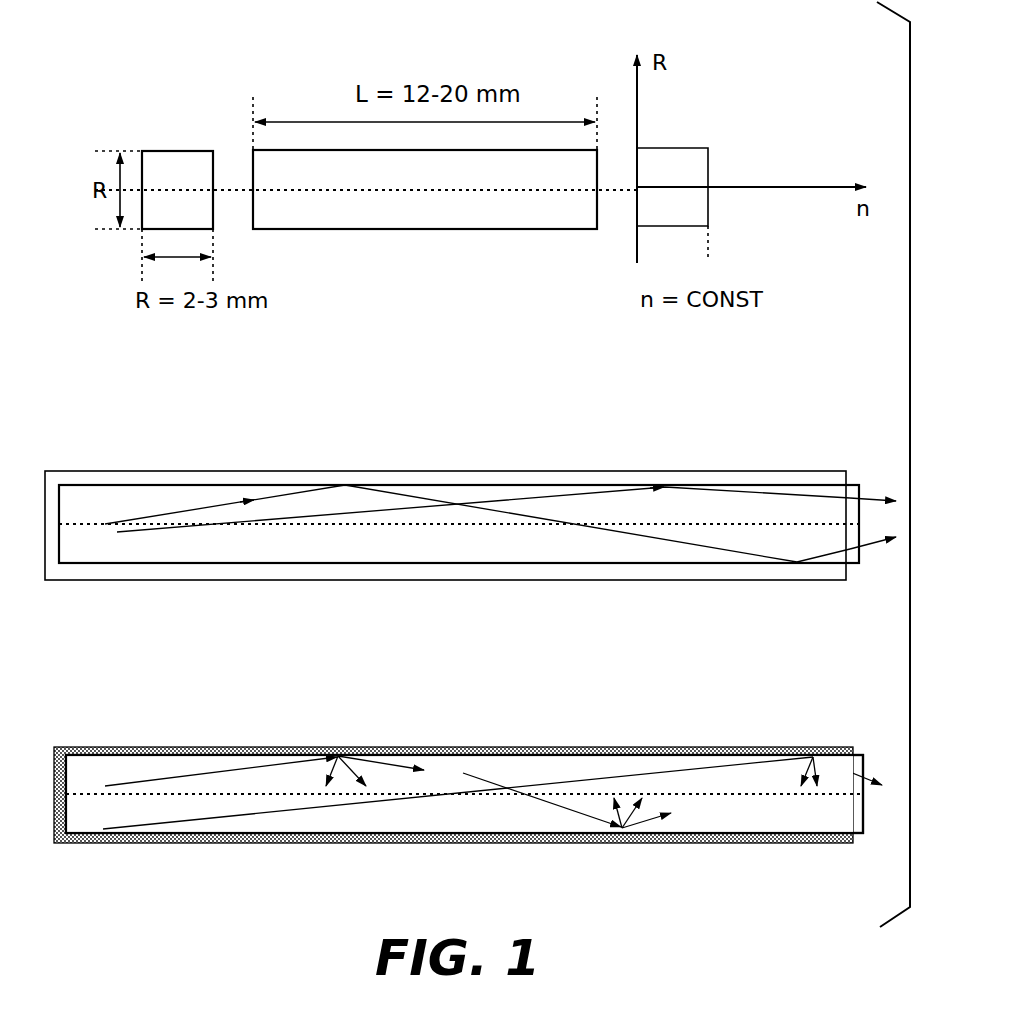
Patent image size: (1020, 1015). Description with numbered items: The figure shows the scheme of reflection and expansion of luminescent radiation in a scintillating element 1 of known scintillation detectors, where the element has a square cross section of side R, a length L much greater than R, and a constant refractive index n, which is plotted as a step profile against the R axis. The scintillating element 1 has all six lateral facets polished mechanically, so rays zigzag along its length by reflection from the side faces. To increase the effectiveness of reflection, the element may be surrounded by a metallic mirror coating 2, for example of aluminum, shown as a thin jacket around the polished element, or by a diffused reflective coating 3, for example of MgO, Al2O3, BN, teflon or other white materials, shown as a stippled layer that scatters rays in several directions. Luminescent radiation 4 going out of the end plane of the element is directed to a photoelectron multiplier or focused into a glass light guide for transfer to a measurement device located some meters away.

The scintillating element 1 is at (860, 481).
The metallic mirror coating 2 is at (152, 469).
The diffused reflective coating 3 is at (194, 745).
The luminescent radiation 4 is at (856, 657).